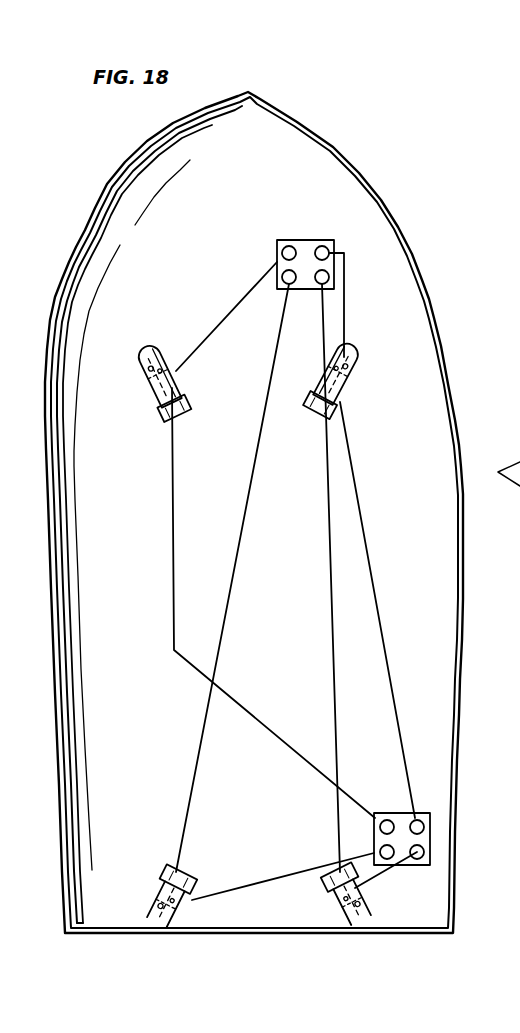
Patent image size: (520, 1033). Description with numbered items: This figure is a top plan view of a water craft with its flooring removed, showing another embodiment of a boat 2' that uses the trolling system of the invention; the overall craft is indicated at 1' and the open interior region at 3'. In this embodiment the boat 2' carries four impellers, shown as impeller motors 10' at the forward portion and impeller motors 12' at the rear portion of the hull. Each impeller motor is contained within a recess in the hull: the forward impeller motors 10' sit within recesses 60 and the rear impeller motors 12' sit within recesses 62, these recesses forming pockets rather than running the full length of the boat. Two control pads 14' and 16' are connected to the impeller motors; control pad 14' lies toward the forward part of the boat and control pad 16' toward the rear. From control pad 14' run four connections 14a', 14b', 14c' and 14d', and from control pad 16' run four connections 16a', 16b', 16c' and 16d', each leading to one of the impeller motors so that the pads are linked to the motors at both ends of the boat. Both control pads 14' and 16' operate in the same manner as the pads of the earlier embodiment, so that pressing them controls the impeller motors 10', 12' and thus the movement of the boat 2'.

The boat 1' is at (254, 512).
The boat 2' is at (272, 512).
The deck 3' is at (132, 515).
The impeller motor 10' is at (258, 396).
The impeller motor 12' is at (162, 895).
The control pad 14' is at (305, 242).
The front line 14a' is at (226, 316).
The front line 14b' is at (364, 305).
The front line 14c' is at (232, 578).
The front line 14d' is at (312, 578).
The control pad 16' is at (400, 815).
The rear line 16a' is at (247, 603).
The rear line 16b' is at (386, 610).
The rear line 16c' is at (283, 872).
The rear line 16d' is at (391, 883).
The recess 60 is at (145, 376).
The recess 62 is at (172, 870).